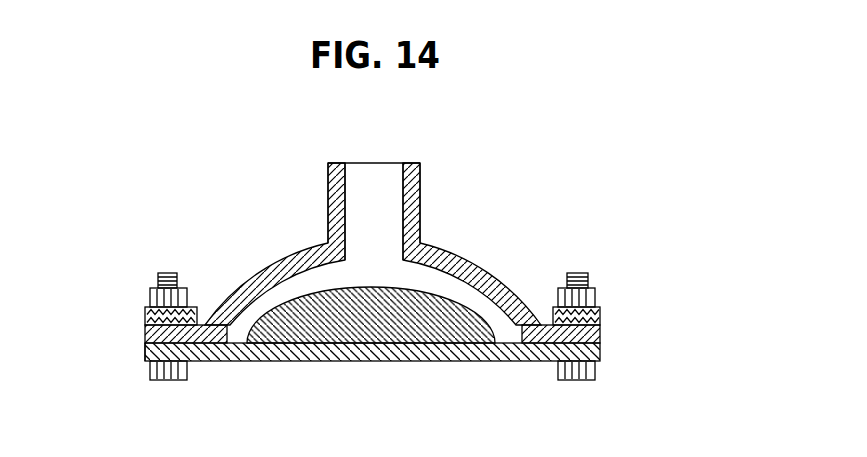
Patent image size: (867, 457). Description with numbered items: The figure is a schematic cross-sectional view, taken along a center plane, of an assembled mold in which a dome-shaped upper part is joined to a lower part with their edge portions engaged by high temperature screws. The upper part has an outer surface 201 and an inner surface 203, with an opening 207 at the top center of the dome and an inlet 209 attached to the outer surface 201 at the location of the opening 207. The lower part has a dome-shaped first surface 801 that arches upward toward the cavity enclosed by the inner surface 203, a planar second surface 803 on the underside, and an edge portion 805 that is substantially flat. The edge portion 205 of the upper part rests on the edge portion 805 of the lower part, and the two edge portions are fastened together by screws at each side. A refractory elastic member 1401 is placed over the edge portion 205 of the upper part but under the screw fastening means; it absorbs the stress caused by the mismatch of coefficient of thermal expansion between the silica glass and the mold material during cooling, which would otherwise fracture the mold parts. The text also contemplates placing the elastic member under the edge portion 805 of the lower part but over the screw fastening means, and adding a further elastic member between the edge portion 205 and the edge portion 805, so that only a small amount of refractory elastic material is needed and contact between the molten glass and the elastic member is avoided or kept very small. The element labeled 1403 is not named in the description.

The outer surface 201 is at (510, 269).
The inner surface 203 is at (263, 310).
The edge portion 205 is at (600, 333).
The opening 207 is at (365, 244).
The inlet 209 is at (420, 192).
The first surface 801 is at (302, 287).
The second surface 803 is at (434, 373).
The edge portion 805 is at (146, 353).
The refractory elastic member 1401 is at (596, 298).
The washer 1403 is at (146, 315).